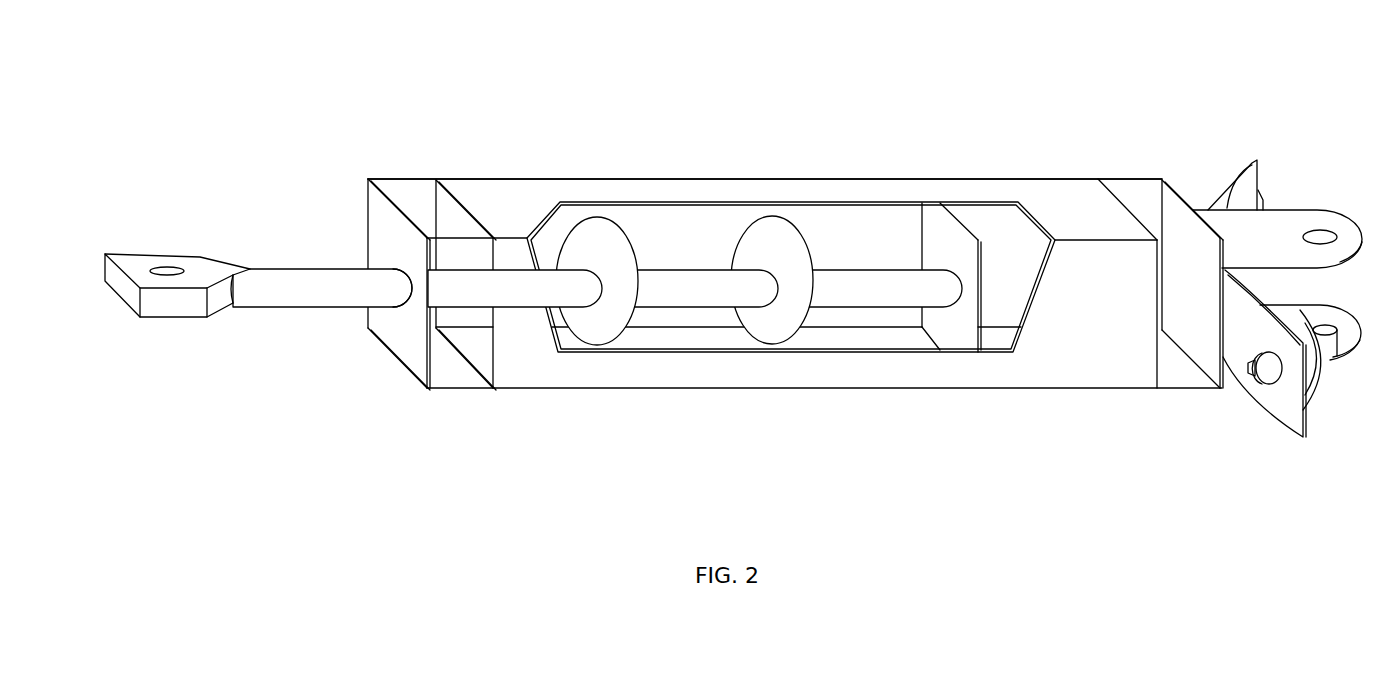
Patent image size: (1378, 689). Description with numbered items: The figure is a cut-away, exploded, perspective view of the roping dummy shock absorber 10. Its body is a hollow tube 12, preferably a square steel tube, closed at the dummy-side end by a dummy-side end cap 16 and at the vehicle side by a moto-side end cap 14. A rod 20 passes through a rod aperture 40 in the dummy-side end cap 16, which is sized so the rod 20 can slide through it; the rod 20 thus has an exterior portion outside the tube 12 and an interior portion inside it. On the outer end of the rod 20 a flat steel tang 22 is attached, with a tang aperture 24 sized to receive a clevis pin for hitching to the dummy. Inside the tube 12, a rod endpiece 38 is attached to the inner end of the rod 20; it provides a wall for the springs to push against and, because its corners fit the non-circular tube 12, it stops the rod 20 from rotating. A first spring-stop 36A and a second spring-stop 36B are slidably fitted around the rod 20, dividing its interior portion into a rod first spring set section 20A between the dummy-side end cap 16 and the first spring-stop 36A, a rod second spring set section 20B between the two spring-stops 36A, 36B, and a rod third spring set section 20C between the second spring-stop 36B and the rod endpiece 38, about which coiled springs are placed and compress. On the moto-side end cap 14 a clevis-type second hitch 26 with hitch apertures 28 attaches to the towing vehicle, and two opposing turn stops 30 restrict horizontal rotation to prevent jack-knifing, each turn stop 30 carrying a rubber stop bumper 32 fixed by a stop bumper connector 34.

The roping dummy shock absorber 10 is at (680, 142).
The hollow tube 12 is at (1022, 179).
The moto-side end cap 14 is at (1168, 180).
The dummy-side end cap 16 is at (399, 270).
The rod 20 is at (287, 269).
The rod first spring set section 20A is at (563, 262).
The rod second spring set section 20B is at (640, 259).
The rod third spring set section 20C is at (822, 256).
The tang 22 is at (199, 257).
The tang aperture 24 is at (167, 267).
The second hitch 26 is at (1293, 210).
The hitch apertures 28 is at (1318, 230).
The turn stops 30 is at (1215, 208).
The stop bumpers 32 is at (1253, 162).
The stop bumper connectors 34 is at (1267, 384).
The first spring-stop 36A is at (597, 217).
The second spring-stop 36B is at (772, 216).
The rod endpiece 38 is at (959, 223).
The rod aperture 40 is at (412, 307).